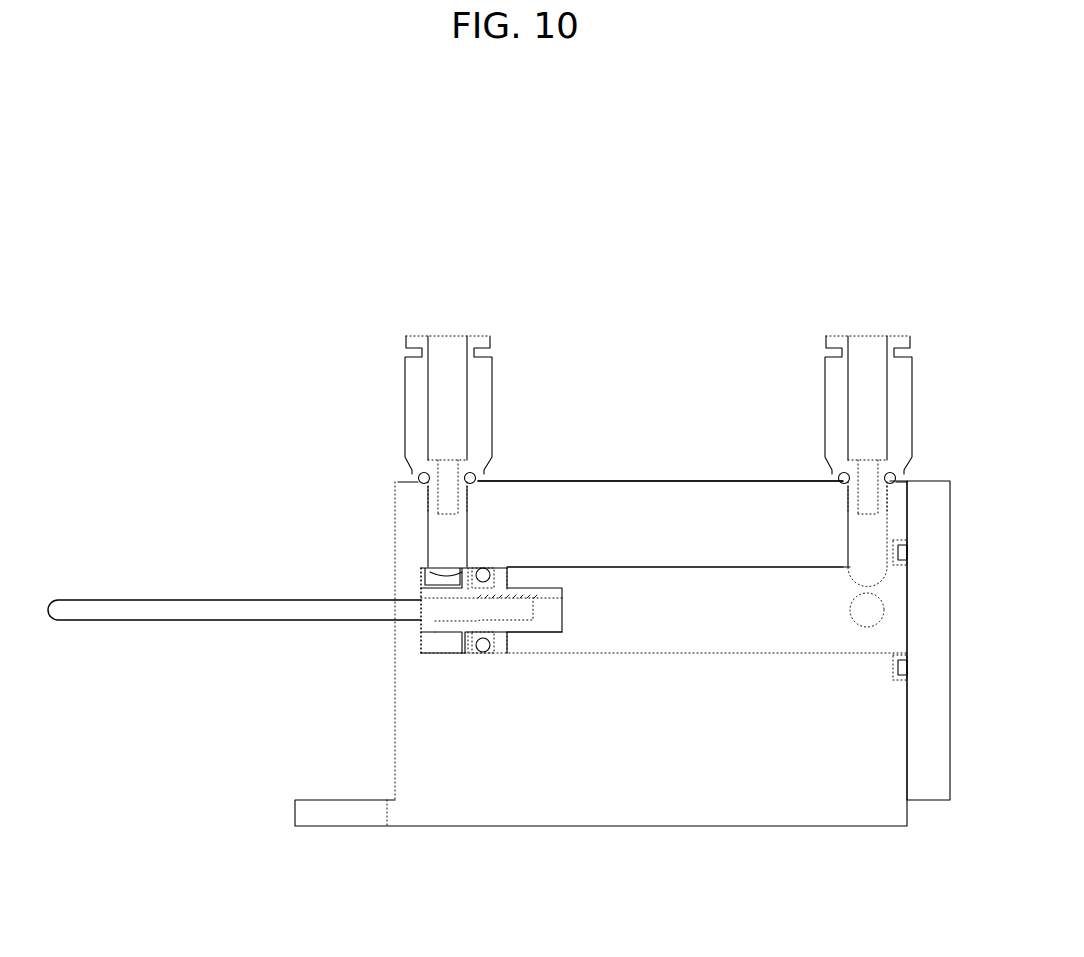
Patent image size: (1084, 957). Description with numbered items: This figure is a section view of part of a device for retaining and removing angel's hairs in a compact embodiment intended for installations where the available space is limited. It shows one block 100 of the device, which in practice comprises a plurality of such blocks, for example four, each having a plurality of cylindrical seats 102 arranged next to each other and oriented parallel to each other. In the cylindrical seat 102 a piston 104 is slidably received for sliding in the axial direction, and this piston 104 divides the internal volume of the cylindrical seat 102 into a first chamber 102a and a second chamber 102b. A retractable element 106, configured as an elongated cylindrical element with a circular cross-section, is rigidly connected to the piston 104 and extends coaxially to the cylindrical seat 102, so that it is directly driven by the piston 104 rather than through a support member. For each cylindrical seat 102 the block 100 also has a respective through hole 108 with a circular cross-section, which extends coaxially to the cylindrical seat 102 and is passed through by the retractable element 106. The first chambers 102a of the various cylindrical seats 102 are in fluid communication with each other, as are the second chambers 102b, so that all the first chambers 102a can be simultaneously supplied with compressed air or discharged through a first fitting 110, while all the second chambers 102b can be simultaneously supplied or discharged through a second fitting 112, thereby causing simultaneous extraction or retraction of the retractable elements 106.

The block 100 is at (618, 477).
The cylindrical seat 102 is at (775, 650).
The first chamber 102a is at (439, 645).
The second chamber 102b is at (732, 605).
The piston 104 is at (483, 630).
The retractable element 106 is at (210, 595).
The through hole 108 is at (408, 618).
The first fitting 110 is at (435, 336).
The second fitting 112 is at (862, 336).